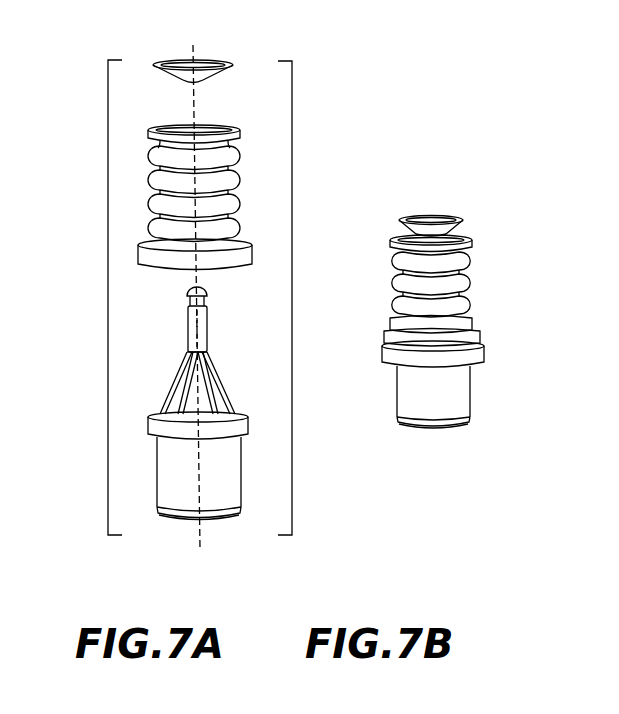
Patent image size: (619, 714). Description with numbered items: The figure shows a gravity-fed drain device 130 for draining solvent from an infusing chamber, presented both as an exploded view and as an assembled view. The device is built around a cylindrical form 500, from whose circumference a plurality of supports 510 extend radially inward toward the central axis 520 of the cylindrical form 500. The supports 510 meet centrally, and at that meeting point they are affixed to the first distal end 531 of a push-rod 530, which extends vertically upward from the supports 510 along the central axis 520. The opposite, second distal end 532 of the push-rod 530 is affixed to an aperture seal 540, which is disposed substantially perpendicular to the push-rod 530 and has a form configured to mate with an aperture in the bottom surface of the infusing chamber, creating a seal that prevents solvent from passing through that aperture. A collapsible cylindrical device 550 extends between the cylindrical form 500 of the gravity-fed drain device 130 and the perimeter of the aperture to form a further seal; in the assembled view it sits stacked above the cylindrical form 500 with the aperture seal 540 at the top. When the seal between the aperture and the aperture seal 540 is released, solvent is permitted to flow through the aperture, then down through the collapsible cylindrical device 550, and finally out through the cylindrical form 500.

In FIG. 7A, the gravity-fed drain device 130 is at (88, 239).
In FIG. 7B, the gravity-fed drain device 130 is at (481, 470).
In FIG. 7A, the cylindrical form 500 is at (225, 480).
In FIG. 7B, the cylindrical form 500 is at (451, 395).
In FIG. 7A, the supports 510 is at (178, 390).
In FIG. 7A, the central axis 520 is at (200, 547).
In FIG. 7A, the push-rod 530 is at (149, 326).
In FIG. 7A, the first distal end 531 is at (226, 341).
In FIG. 7A, the second distal end 532 is at (224, 301).
In FIG. 7A, the aperture seal 540 is at (207, 77).
In FIG. 7B, the aperture seal 540 is at (457, 218).
In FIG. 7A, the collapsible cylindrical device 550 is at (234, 183).
In FIG. 7B, the collapsible cylindrical device 550 is at (398, 314).